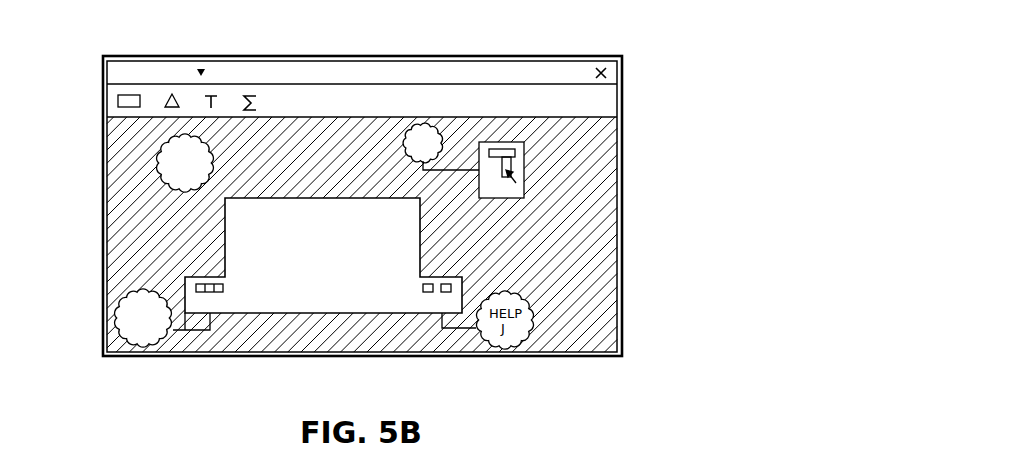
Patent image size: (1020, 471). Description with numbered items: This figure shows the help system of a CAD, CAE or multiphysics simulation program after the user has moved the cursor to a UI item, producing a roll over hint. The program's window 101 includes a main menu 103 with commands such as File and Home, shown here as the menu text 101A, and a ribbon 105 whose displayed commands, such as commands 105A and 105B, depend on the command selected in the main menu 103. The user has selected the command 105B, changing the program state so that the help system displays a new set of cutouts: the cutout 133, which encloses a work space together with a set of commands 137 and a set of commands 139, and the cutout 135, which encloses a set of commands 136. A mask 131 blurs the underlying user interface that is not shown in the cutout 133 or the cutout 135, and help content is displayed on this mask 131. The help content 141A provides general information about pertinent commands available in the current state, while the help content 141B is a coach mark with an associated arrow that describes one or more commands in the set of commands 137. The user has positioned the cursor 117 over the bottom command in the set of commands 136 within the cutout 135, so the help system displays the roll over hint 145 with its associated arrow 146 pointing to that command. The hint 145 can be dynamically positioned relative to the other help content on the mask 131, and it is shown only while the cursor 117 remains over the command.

The window 101 is at (324, 55).
The menu bar 101A is at (199, 69).
The main menu 103 is at (543, 75).
The ribbon 105 is at (473, 95).
The command 105A is at (218, 100).
The command 105B is at (259, 100).
The cursor 117 is at (524, 183).
The mask 131 is at (608, 325).
The cutout 133 is at (380, 303).
The cutout 135 is at (524, 176).
The set of commands 136 is at (515, 153).
The set of commands 137 is at (218, 293).
The set of commands 139 is at (427, 293).
The help content 141A is at (158, 172).
The help content 141B is at (167, 340).
The roll over hint 145 is at (413, 127).
The arrow 146 is at (470, 168).